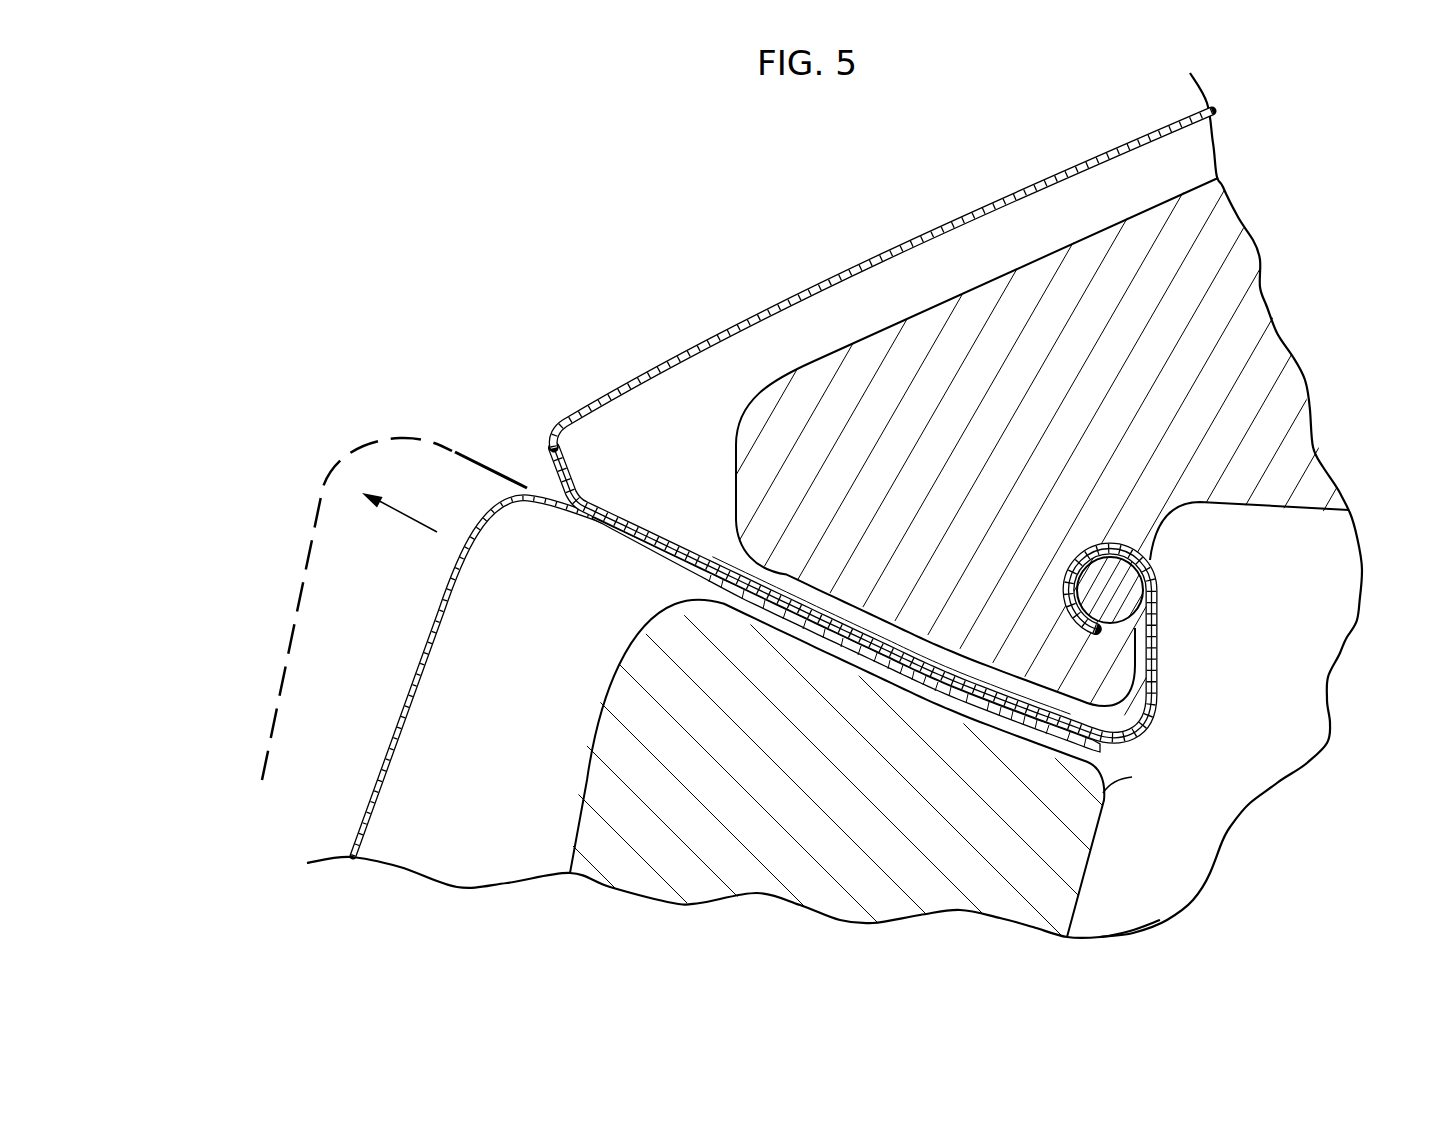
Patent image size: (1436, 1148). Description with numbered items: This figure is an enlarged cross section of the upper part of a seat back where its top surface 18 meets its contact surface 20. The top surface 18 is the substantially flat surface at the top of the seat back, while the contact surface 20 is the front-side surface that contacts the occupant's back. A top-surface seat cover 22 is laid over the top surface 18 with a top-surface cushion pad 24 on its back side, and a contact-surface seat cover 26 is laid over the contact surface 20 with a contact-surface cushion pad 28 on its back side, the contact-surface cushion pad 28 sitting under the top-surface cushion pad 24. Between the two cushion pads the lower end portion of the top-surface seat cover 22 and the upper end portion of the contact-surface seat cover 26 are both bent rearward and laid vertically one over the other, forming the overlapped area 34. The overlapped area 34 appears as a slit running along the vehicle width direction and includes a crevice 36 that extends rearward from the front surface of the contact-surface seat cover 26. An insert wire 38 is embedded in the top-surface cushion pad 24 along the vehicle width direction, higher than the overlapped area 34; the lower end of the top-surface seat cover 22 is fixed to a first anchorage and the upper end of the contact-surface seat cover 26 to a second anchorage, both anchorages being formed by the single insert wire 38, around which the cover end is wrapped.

The top surface 18 is at (840, 424).
The contact surface 20 is at (372, 785).
The top-surface seat cover 22 is at (890, 247).
The top-surface cushion pad 24 is at (1255, 384).
The contact-surface seat cover 26 is at (298, 592).
The contact-surface cushion pad 28 is at (812, 873).
The overlapped area 34 is at (553, 511).
The crevice 36 is at (549, 456).
The insert wire 38 is at (1122, 588).